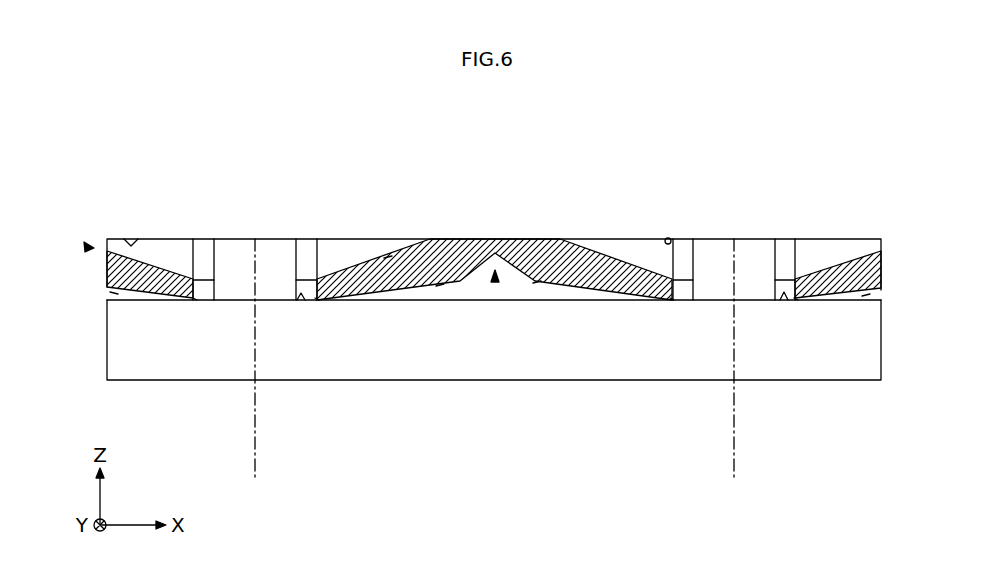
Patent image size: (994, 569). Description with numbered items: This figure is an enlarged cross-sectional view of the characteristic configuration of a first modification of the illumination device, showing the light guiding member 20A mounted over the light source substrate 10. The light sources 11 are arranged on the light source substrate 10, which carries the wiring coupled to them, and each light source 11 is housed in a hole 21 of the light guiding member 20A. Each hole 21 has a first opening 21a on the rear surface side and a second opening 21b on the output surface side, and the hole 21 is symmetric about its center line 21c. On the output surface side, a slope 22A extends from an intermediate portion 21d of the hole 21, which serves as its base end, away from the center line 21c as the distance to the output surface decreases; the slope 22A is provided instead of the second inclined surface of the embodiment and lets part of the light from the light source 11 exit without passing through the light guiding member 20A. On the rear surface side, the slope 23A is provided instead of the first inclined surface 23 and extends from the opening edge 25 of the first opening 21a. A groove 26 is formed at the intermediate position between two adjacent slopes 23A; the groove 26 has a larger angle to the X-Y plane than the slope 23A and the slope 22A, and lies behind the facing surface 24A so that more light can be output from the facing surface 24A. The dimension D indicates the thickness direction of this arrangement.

The light source substrate 10 is at (863, 365).
The light source 11 is at (283, 252).
The light guiding member 20A is at (86, 247).
The hole 21 is at (204, 281).
The first opening 21a is at (299, 300).
The second opening 21b is at (126, 239).
The center line 21c is at (496, 376).
The intermediate portion 21d is at (196, 281).
The slope 22A is at (172, 251).
The first inclined surface 23 is at (118, 294).
The slope 23A is at (440, 285).
The facing surface 24A is at (522, 239).
The opening edge 25 is at (195, 300).
The groove 26 is at (497, 282).
The thickness direction D is at (388, 257).